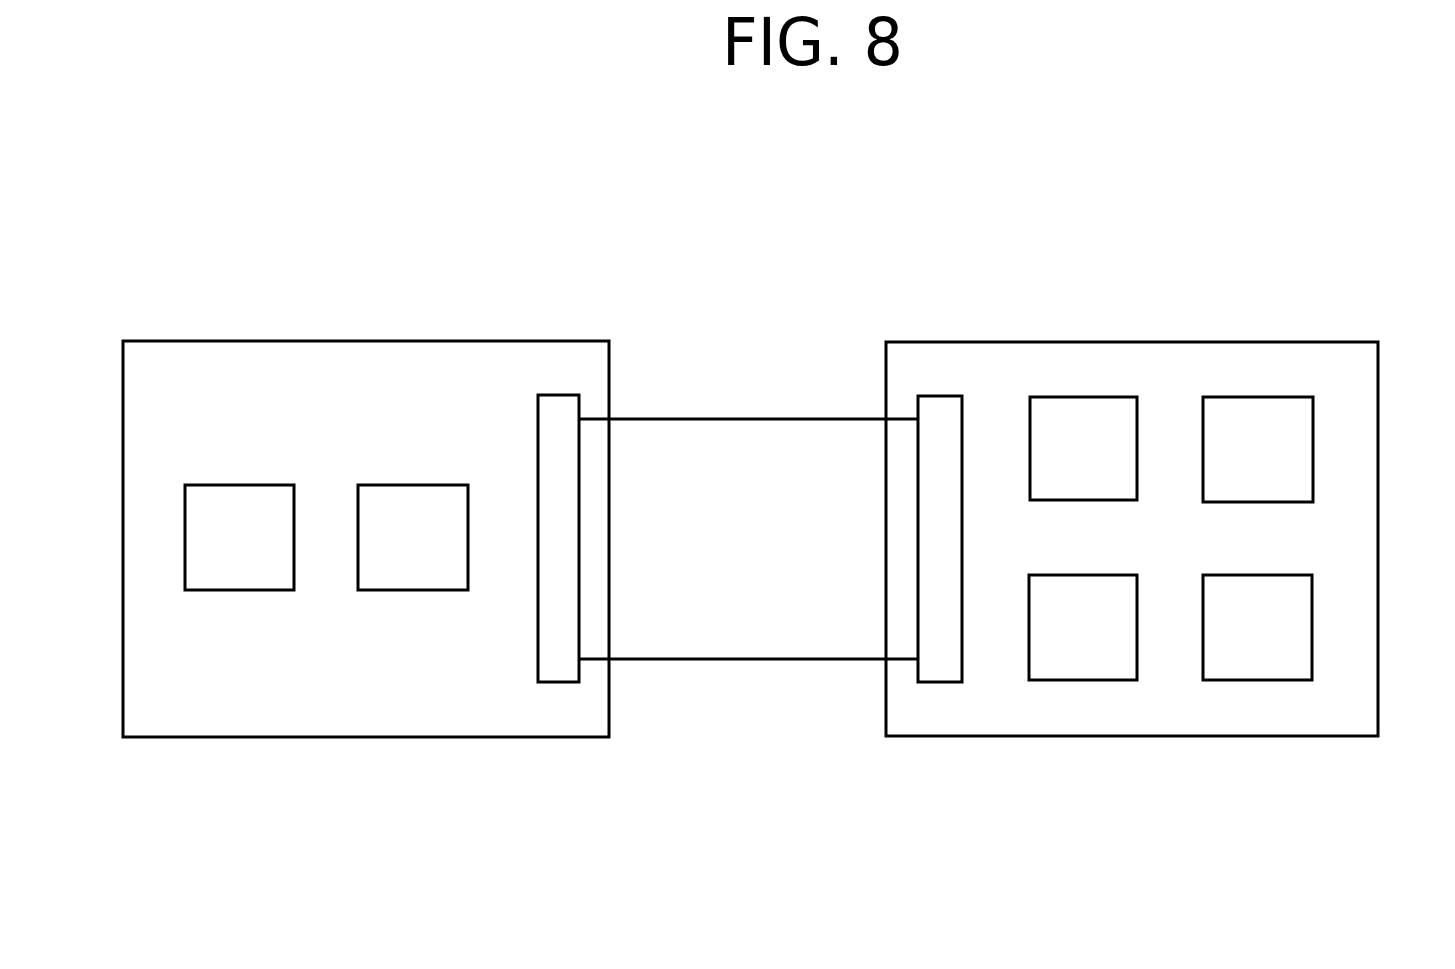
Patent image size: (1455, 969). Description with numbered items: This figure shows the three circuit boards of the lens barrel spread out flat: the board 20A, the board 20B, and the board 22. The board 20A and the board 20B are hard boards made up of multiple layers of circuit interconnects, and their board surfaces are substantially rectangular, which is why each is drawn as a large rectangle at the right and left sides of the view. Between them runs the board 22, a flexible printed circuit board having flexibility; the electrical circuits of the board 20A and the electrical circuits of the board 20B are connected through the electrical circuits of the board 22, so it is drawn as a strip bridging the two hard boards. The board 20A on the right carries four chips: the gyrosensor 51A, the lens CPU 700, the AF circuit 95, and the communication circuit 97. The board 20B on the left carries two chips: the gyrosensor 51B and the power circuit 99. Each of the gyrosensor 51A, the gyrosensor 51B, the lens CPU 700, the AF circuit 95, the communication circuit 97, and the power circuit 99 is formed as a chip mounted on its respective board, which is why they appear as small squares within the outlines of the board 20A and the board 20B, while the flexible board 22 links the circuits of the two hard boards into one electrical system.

The board 20A is at (1323, 342).
The board 20B is at (249, 341).
The board 22 is at (763, 418).
The AF circuit 95 is at (1088, 397).
The communication circuit 97 is at (1259, 397).
The gyrosensor 51A is at (1081, 680).
The gyrosensor 51B is at (412, 590).
The power circuit 99 is at (236, 590).
The lens CPU 700 is at (1262, 680).